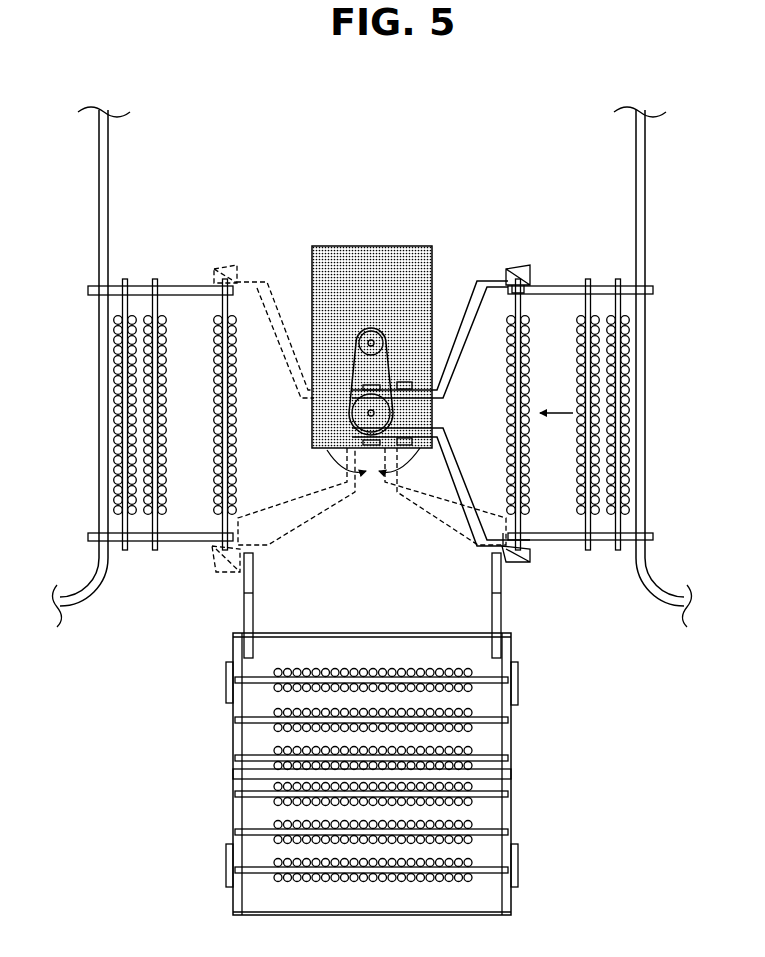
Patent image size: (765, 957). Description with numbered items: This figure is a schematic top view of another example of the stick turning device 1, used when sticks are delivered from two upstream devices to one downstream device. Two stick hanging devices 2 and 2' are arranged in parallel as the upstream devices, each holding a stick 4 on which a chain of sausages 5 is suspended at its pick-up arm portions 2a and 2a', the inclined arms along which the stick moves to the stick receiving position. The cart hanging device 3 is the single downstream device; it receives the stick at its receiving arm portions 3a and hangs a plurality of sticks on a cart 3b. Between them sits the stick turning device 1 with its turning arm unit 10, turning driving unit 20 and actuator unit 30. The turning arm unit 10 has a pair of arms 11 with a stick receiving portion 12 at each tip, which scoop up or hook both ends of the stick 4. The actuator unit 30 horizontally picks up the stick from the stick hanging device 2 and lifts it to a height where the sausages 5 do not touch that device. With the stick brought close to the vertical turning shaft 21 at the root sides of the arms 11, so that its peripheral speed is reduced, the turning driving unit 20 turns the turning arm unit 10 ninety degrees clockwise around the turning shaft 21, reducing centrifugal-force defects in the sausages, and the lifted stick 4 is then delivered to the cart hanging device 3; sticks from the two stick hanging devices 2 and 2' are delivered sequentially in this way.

The stick turning device 1 is at (353, 226).
The stick hanging device 2 is at (671, 367).
The stick hanging device 2' is at (72, 367).
The pick-up arm portion 2a is at (536, 576).
The pick-up arm portion 2a' is at (206, 397).
The cart hanging device 3 is at (540, 667).
The receiving arm portion 3a is at (242, 622).
The cart 3b is at (508, 737).
The stick 4 is at (620, 305).
The chain of sausages 5 is at (624, 359).
The turning arm unit 10 is at (482, 270).
The arm 11 is at (475, 312).
The stick receiving portion 12 is at (519, 266).
The turning driving unit 20 is at (300, 285).
The turning shaft 21 is at (374, 413).
The actuator unit 30 is at (432, 374).